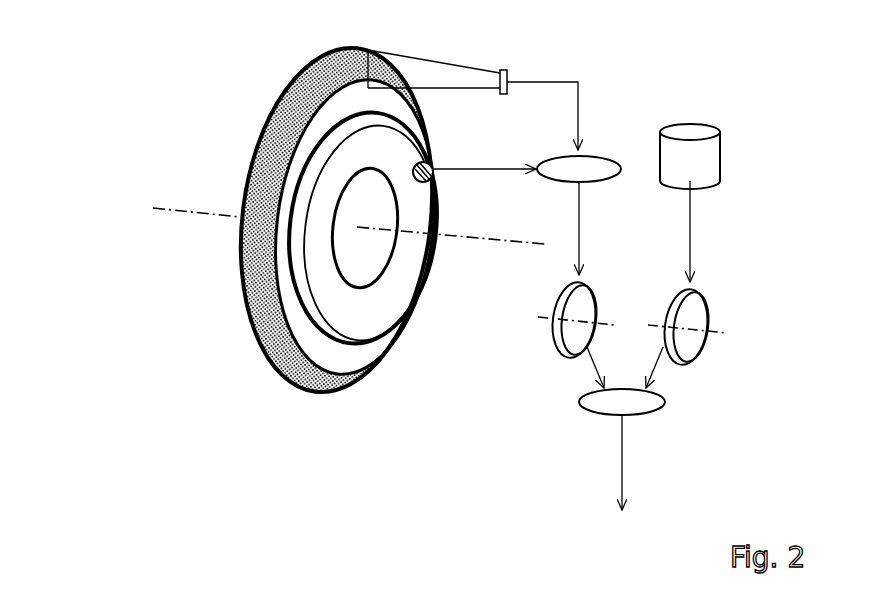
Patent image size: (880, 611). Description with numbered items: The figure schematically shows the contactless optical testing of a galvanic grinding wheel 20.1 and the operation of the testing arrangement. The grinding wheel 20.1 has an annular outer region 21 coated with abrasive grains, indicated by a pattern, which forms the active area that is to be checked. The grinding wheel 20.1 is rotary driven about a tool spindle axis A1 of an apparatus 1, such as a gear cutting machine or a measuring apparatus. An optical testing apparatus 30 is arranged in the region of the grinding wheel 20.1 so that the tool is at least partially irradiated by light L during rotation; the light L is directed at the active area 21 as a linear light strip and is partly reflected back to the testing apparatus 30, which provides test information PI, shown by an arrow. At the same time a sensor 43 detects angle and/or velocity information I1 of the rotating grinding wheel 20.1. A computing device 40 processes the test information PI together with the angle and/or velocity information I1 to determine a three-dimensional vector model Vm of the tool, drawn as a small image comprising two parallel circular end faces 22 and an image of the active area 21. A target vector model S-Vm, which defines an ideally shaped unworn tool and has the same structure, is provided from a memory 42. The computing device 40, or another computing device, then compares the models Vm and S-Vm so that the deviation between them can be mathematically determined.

The apparatus 1 is at (61, 65).
The galvanic grinding wheel 20.1 is at (336, 216).
The annular outer region 21 is at (272, 148).
The circular end faces 22 is at (593, 330).
The optical testing apparatus 30 is at (504, 62).
The computing device 40 is at (621, 172).
The memory 42 is at (720, 170).
The sensor 43 is at (432, 178).
The light L is at (419, 55).
The tool spindle axis A1 is at (331, 219).
The angle and/or velocity information I1 is at (485, 158).
The test information PI is at (555, 116).
The 3-dimensional vector model Vm is at (600, 282).
The target vector model S-Vm is at (712, 288).